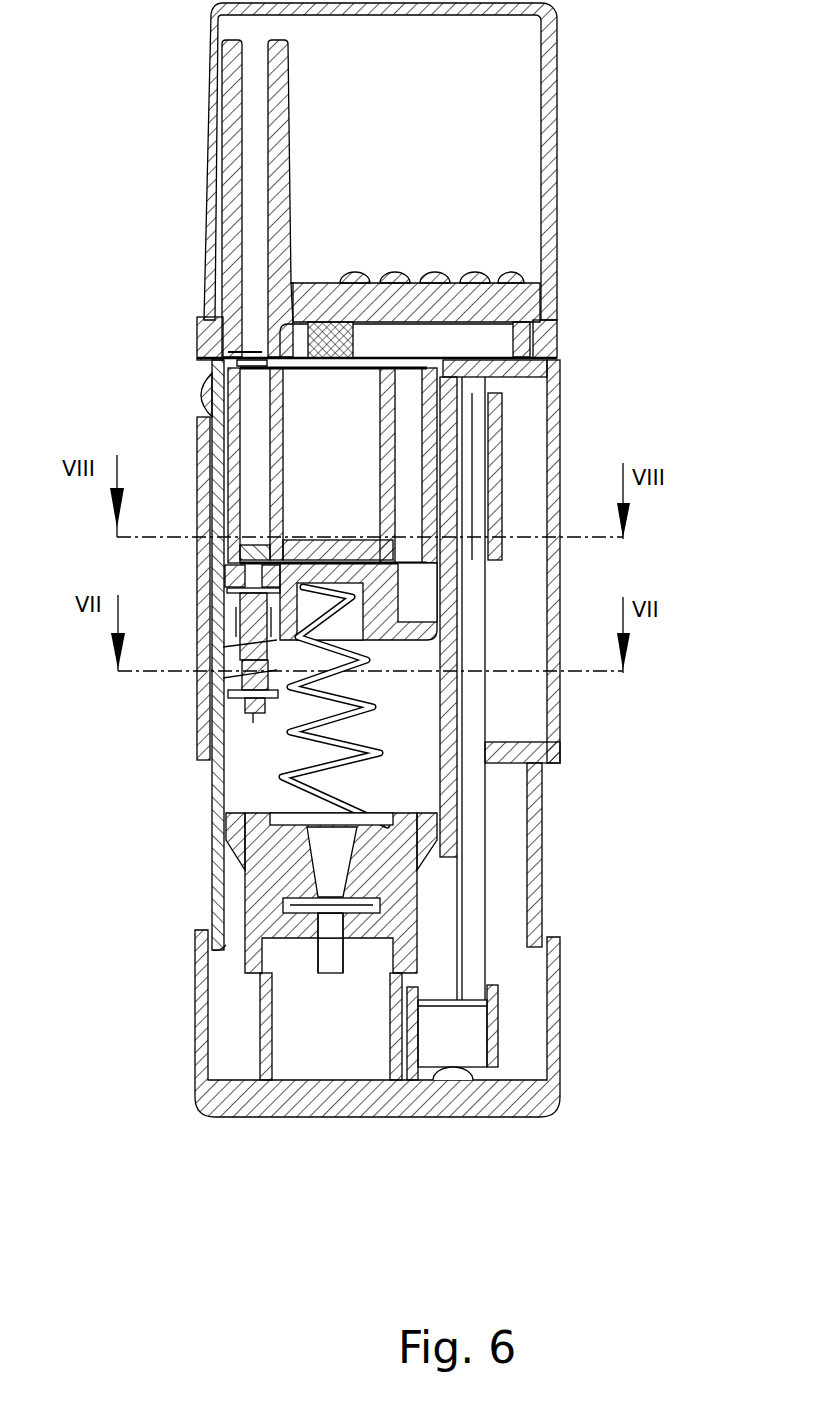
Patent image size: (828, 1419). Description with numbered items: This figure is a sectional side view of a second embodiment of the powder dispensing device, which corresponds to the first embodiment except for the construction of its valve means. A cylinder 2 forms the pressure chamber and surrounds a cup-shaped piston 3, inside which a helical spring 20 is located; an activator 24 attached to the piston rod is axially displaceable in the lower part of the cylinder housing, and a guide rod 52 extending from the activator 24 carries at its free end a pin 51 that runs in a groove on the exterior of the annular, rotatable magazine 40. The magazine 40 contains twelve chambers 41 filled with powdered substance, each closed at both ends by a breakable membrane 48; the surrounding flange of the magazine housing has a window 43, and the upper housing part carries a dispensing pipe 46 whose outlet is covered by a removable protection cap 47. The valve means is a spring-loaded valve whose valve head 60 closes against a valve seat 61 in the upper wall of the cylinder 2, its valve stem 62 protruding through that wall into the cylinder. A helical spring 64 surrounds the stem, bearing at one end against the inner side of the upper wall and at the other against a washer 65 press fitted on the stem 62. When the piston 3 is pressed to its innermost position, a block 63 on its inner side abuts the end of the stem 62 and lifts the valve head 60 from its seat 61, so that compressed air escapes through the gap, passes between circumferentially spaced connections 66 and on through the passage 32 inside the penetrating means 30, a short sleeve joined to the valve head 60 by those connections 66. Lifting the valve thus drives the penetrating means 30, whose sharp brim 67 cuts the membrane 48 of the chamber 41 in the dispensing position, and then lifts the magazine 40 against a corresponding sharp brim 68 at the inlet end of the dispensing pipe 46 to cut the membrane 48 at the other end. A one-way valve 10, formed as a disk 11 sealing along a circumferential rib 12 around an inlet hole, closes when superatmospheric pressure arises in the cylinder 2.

The cylinder 2 is at (457, 697).
The piston 3 is at (250, 900).
The one-way valve 10 is at (327, 920).
The disk 11 is at (360, 862).
The circumferential rib 12 is at (343, 927).
The helical spring 20 is at (282, 773).
The activator 24 is at (250, 1093).
The penetrating means 30 is at (230, 566).
The passage 32 is at (258, 579).
The magazine 40 is at (211, 464).
The chamber 41 is at (249, 498).
The window 43 is at (203, 395).
The dispensing pipe 46 is at (226, 221).
The protection cap 47 is at (206, 146).
The membrane 48 is at (417, 358).
The pin 51 is at (428, 543).
The guide rod 52 is at (473, 824).
The valve head 60 is at (200, 647).
The valve seat 61 is at (198, 625).
The valve stem 62 is at (218, 728).
The block 63 is at (233, 823).
The helical spring 64 is at (198, 687).
The washer 65 is at (201, 708).
The connections 66 is at (201, 597).
The sharp brim 67 is at (200, 545).
The sharp brim 68 is at (240, 353).